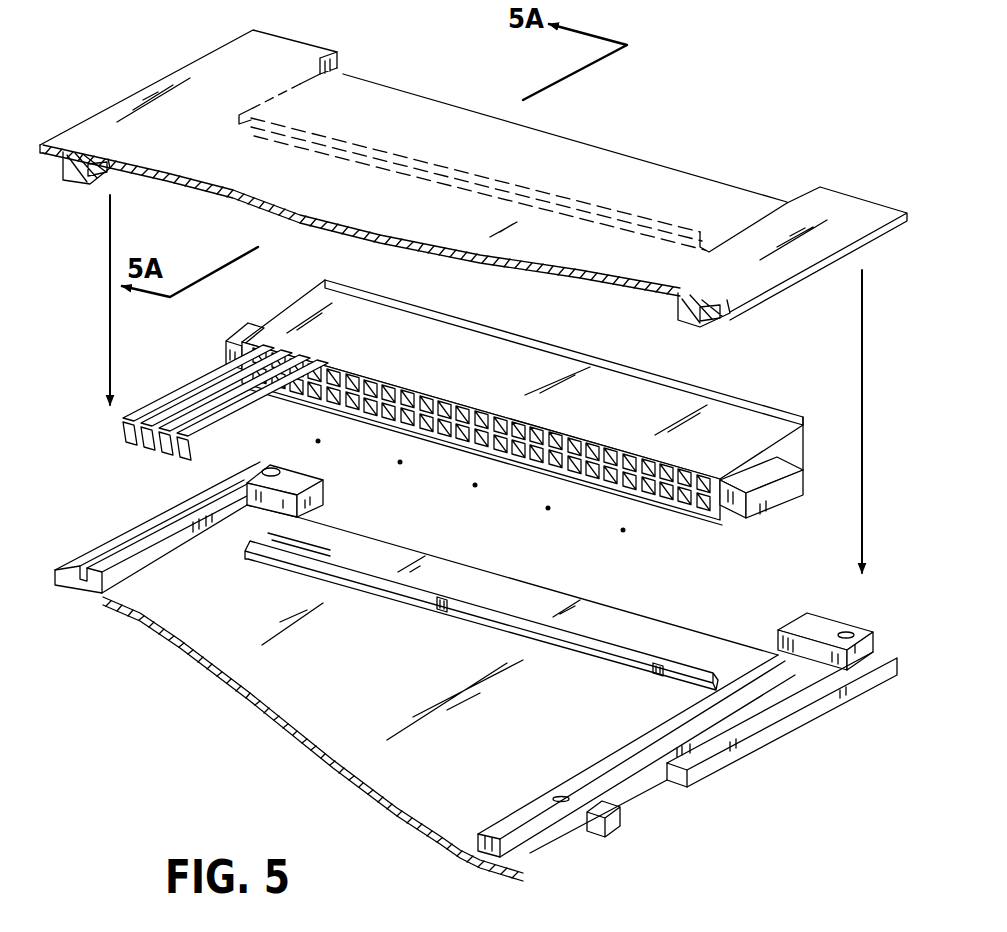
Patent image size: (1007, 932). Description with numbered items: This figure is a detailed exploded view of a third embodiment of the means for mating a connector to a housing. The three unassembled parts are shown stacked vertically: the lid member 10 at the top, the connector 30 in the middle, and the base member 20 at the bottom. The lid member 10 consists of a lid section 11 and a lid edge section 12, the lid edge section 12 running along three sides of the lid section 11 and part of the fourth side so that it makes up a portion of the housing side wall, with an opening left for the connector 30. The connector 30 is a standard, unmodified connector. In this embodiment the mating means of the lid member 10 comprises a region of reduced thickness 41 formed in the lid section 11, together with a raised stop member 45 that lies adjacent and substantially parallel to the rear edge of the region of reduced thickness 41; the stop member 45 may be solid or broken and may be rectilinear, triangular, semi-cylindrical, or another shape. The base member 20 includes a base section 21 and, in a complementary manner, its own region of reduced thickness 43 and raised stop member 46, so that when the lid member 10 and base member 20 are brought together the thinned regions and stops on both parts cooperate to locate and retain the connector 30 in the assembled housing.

The lid member 10 is at (61, 126).
The lid section 11 is at (189, 156).
The lid edge section 12 is at (703, 315).
The base member 20 is at (549, 877).
The base section 21 is at (216, 630).
The connector 30 is at (282, 296).
The region of reduced thickness 41 is at (619, 142).
The region of reduced thickness 43 is at (630, 623).
The stop member 45 is at (340, 143).
The raised stop member 46 is at (442, 598).